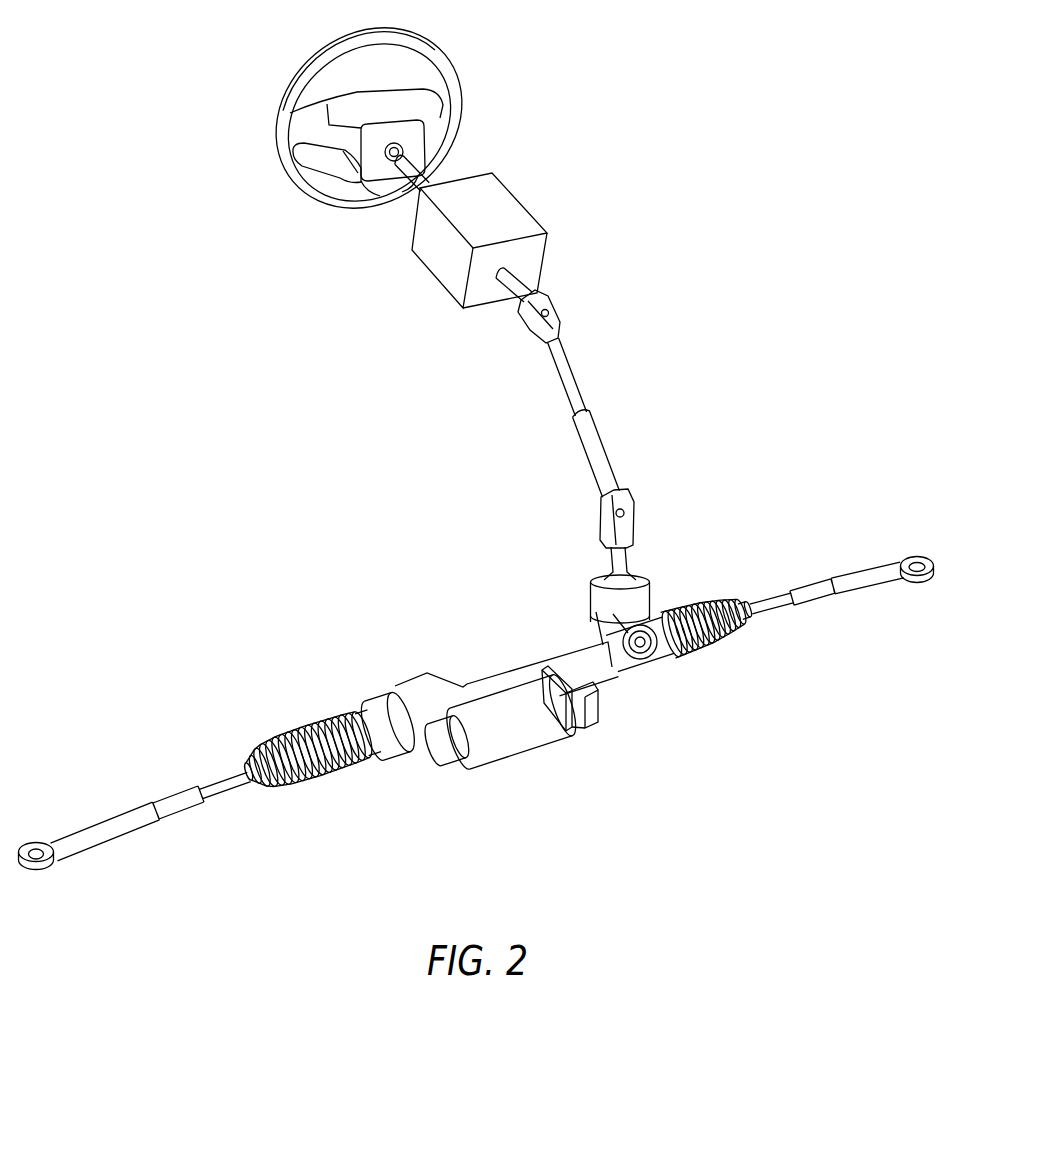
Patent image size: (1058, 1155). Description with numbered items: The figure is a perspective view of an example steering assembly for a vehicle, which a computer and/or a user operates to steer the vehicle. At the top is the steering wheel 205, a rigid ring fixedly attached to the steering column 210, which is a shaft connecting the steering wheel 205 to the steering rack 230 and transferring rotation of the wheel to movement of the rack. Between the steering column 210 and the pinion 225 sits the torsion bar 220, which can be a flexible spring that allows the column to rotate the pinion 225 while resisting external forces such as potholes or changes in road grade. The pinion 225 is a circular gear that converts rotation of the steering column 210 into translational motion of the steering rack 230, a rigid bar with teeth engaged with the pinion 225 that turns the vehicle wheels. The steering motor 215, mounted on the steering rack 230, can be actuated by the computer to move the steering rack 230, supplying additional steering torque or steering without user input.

The steering wheel 205 is at (461, 100).
The steering column 210 is at (517, 280).
The steering motor 215 is at (503, 744).
The torsion bar 220 is at (633, 542).
The pinion 225 is at (650, 596).
The steering rack 230 is at (553, 672).